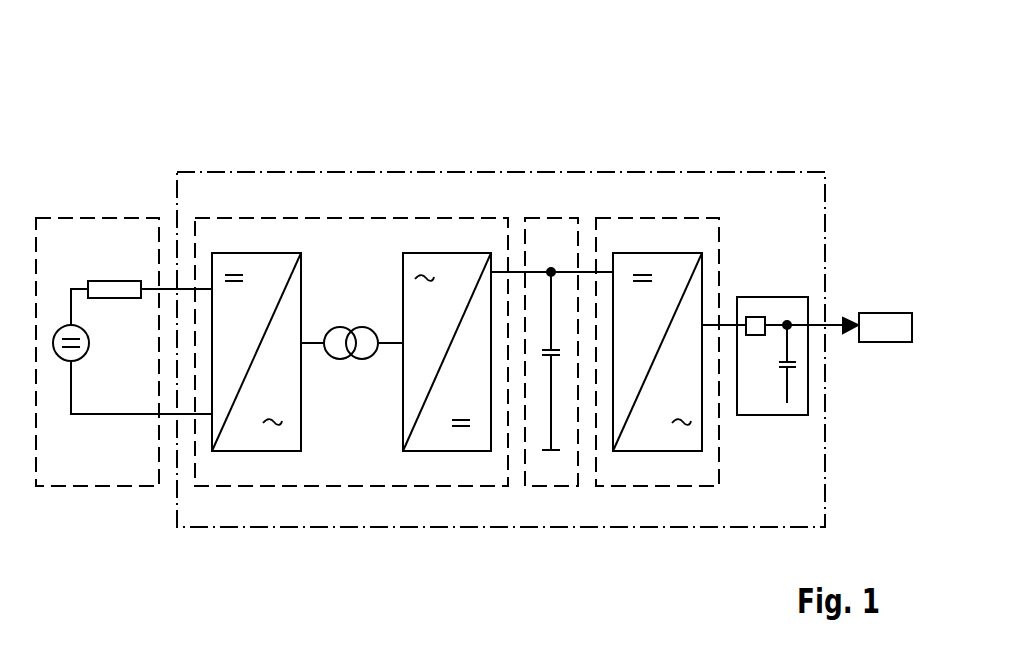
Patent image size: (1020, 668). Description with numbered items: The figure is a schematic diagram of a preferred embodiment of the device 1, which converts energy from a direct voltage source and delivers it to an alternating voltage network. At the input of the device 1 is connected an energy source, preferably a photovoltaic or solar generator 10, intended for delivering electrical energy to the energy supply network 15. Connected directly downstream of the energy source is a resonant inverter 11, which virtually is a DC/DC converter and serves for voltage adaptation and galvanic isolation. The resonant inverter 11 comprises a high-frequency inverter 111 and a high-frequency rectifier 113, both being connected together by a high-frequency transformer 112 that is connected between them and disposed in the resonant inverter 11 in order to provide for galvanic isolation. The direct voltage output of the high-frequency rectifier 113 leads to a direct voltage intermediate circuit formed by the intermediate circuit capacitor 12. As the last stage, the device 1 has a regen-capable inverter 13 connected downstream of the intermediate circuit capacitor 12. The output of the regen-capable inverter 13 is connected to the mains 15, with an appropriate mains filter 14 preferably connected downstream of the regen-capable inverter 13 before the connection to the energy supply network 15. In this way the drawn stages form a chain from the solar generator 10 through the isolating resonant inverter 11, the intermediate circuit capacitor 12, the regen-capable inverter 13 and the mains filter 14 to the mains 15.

The device 1 is at (513, 172).
The photovoltaic or solar generator 10 is at (100, 218).
The resonant inverter 11 is at (334, 218).
The high-frequency inverter 111 is at (247, 253).
The high-frequency transformer 112 is at (352, 326).
The high-frequency rectifier 113 is at (424, 253).
The intermediate circuit capacitor 12 is at (547, 218).
The regen-capable inverter 13 is at (661, 218).
The mains filter 14 is at (762, 297).
The energy supply network 15 is at (893, 313).